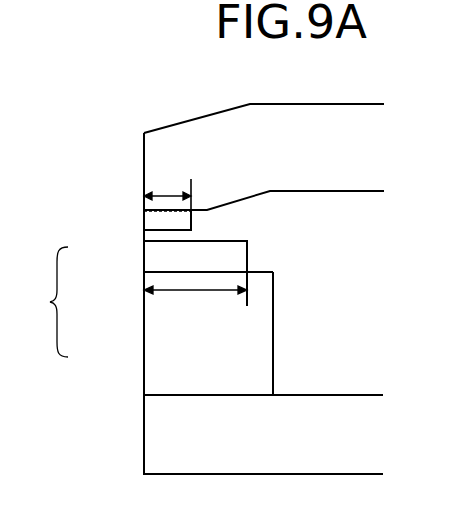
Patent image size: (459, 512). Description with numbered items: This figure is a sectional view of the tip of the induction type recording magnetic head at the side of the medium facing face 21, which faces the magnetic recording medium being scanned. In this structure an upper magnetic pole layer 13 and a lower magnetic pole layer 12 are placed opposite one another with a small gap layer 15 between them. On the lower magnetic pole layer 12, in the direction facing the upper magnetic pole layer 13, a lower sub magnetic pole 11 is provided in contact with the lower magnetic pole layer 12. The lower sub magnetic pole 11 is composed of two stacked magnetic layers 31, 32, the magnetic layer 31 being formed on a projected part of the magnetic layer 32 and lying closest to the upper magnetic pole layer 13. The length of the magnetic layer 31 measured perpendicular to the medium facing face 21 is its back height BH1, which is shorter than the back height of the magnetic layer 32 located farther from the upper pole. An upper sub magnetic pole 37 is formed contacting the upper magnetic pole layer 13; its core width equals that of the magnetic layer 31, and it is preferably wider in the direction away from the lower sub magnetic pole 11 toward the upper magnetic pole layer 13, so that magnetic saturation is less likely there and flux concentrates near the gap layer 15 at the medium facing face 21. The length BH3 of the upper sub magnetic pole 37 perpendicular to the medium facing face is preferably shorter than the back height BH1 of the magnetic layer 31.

The upper magnetic pole layer 13 is at (144, 158).
The upper sub magnetic pole 37 is at (144, 222).
The length of the upper sub magnetic pole BH3 is at (169, 190).
The gap layer 15 is at (144, 238).
The magnetic layer 31 is at (152, 260).
The back height of the magnetic layer BH1 is at (200, 291).
The magnetic layer 32 is at (152, 348).
The lower sub magnetic pole 11 is at (42, 302).
The medium facing face 21 is at (144, 372).
The lower magnetic pole layer 12 is at (152, 440).